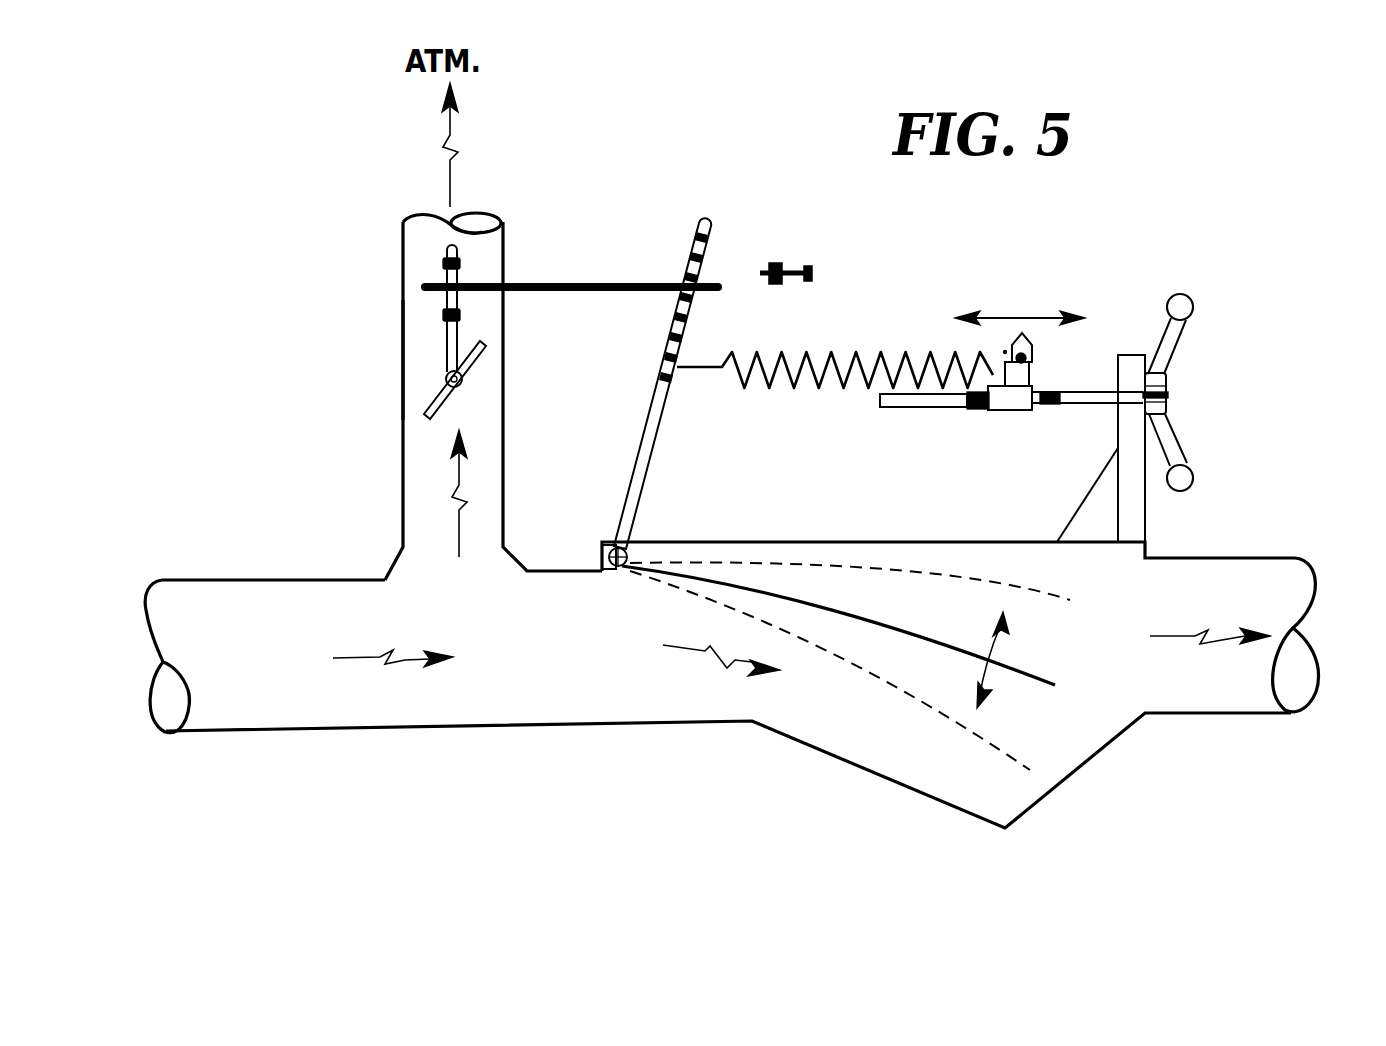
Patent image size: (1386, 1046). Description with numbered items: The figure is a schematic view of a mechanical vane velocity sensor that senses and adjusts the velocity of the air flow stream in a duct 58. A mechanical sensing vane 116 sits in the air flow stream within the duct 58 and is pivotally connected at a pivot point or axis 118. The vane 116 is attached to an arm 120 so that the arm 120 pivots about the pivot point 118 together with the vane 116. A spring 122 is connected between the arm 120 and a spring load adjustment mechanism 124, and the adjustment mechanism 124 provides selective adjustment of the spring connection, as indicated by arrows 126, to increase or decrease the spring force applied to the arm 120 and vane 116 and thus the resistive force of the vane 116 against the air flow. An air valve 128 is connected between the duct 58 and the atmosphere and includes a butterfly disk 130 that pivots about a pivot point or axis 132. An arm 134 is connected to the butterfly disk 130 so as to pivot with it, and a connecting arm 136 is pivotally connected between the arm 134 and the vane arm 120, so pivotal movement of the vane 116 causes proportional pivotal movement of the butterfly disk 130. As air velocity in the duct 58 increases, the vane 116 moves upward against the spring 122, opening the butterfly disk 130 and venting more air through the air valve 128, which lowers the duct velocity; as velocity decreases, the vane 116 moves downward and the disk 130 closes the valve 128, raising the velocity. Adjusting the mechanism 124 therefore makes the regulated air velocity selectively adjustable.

The duct 58 is at (418, 730).
The mechanical sensing vane 116 is at (912, 633).
The pivot point or axis 118 is at (603, 553).
The arm 120 is at (654, 465).
The spring 122 is at (833, 352).
The spring load adjustment mechanism 124 is at (1151, 338).
The arrows 126 is at (1020, 318).
The air valve 128 is at (400, 469).
The butterfly disk 130 is at (462, 374).
The pivot point or axis 132 is at (450, 373).
The arm 134 is at (440, 266).
The connecting arm 136 is at (558, 284).